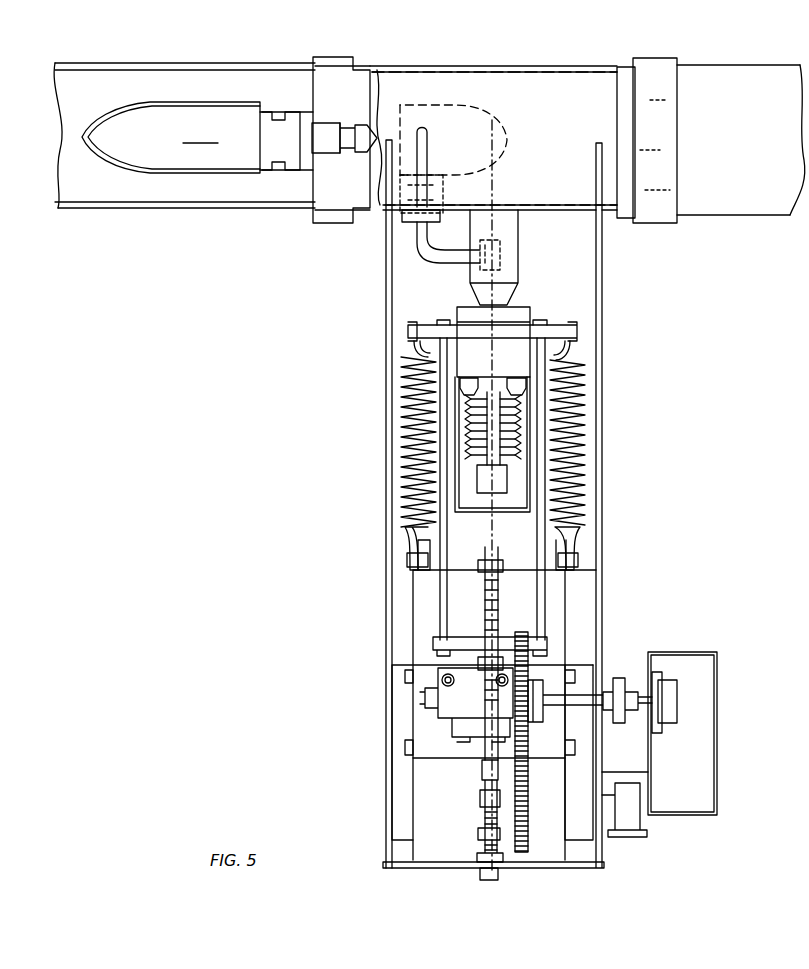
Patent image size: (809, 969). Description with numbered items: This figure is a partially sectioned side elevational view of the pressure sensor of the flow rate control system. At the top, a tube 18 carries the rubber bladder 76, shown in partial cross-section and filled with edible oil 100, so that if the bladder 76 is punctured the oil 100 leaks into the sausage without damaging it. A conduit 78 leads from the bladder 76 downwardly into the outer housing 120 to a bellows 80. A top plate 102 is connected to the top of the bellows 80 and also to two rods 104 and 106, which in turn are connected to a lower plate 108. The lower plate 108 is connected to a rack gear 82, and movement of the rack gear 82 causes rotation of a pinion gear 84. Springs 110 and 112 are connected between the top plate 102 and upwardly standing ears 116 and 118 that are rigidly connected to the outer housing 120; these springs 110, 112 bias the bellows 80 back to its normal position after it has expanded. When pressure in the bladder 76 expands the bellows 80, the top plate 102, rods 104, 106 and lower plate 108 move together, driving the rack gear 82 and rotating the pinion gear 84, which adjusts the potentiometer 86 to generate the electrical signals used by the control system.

The tube 18 is at (108, 210).
The rubber bladder 76 is at (228, 173).
The edible oil 100 is at (200, 134).
The conduit 78 is at (422, 225).
The top plate 102 is at (552, 328).
The spring 110 is at (403, 392).
The spring 112 is at (583, 395).
The bellows 80 is at (520, 430).
The outer housing 120 is at (388, 503).
The rod 104 is at (440, 537).
The upwardly standing ear 116 is at (410, 560).
The rod 106 is at (540, 528).
The upwardly standing ear 118 is at (575, 560).
The lower plate 108 is at (543, 640).
The pinion gear 84 is at (528, 695).
The potentiometer 86 is at (668, 690).
The rack gear 82 is at (532, 837).